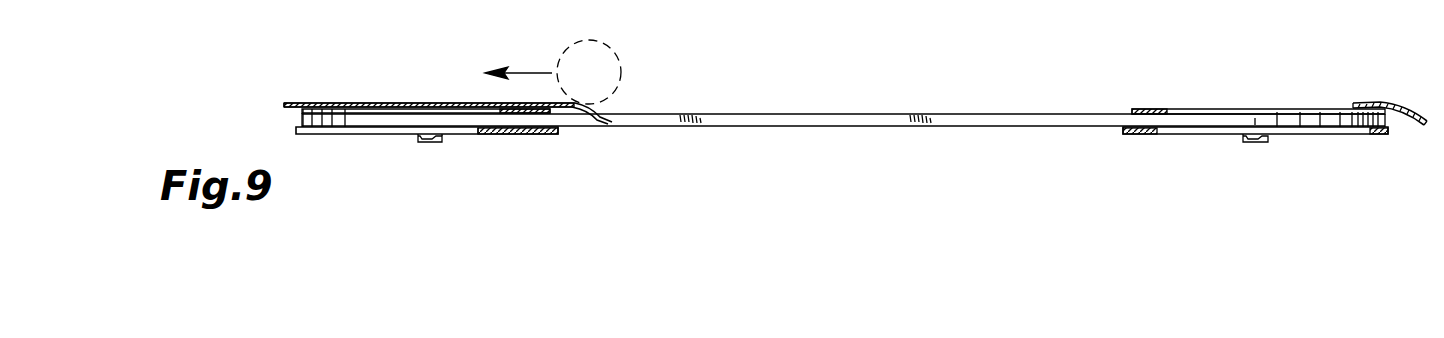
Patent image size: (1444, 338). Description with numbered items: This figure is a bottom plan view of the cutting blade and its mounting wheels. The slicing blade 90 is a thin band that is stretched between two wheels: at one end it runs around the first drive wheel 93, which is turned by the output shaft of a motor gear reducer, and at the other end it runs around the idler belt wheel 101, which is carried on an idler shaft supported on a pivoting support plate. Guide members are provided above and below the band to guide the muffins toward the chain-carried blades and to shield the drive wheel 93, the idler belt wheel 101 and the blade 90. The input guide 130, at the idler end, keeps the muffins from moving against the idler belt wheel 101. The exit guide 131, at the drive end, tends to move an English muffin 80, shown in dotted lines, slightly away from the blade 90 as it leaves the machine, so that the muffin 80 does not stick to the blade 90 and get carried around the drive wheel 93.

The muffin 80 is at (612, 52).
The slicing blade 90 is at (817, 122).
The first drive wheel 93 is at (510, 134).
The idler belt wheel 101 is at (1157, 131).
The input guide 130 is at (1375, 105).
The exit guide 131 is at (365, 103).